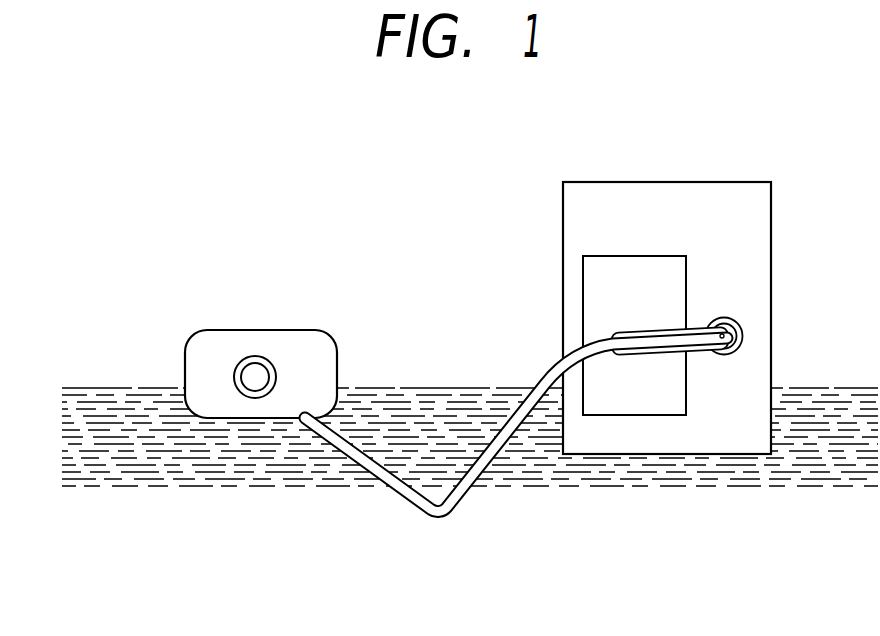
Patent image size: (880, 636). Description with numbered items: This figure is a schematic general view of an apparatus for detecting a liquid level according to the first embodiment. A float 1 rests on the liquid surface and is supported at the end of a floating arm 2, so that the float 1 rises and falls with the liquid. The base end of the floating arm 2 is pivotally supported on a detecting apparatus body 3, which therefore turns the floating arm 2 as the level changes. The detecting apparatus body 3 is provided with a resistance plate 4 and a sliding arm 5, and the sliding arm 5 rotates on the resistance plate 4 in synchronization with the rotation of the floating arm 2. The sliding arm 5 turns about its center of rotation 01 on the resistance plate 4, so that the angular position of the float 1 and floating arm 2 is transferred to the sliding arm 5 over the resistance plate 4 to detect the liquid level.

The float 1 is at (307, 335).
The floating arm 2 is at (401, 494).
The detecting apparatus body 3 is at (602, 162).
The resistance plate 4 is at (603, 270).
The sliding arm 5 is at (667, 332).
The center of rotation 01 is at (743, 333).